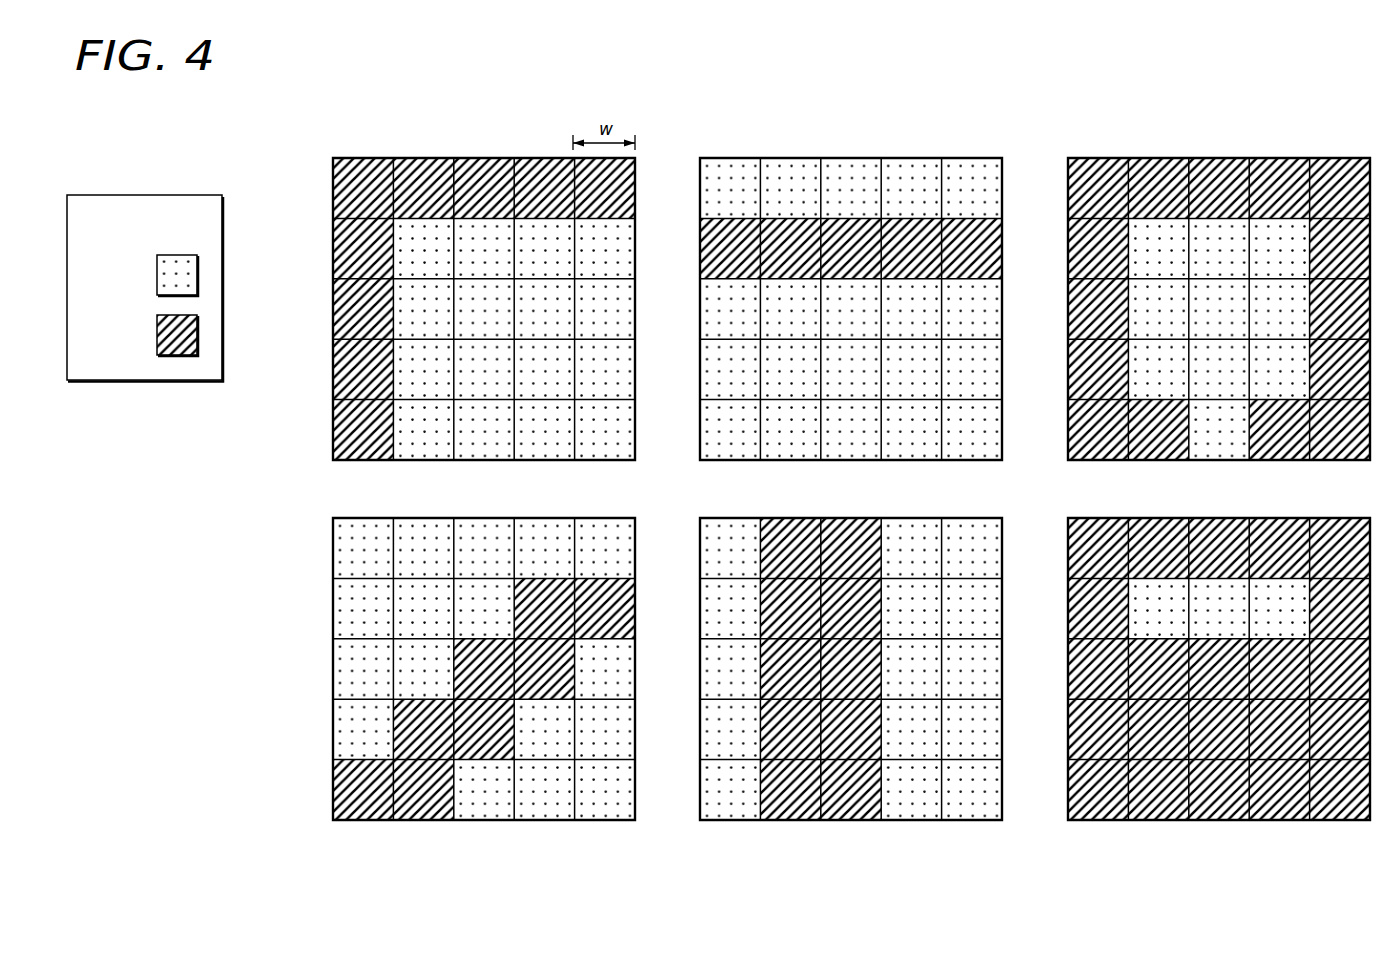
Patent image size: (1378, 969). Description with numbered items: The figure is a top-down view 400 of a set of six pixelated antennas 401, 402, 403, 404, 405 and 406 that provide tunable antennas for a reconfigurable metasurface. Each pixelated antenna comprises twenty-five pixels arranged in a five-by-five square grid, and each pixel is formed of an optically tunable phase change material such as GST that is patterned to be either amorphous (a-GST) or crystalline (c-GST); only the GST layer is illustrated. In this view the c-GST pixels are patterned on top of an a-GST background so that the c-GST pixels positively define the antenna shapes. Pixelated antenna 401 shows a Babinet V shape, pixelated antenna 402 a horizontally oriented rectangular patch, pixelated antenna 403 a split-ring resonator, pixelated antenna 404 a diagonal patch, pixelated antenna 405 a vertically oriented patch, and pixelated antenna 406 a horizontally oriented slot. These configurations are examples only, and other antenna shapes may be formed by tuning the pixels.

The top-down view 400 is at (161, 120).
The pixelated antenna 401 is at (485, 139).
The pixelated antenna 402 is at (853, 139).
The pixelated antenna 403 is at (1221, 139).
The pixelated antenna 404 is at (488, 841).
The pixelated antenna 405 is at (852, 841).
The pixelated antenna 406 is at (1221, 841).